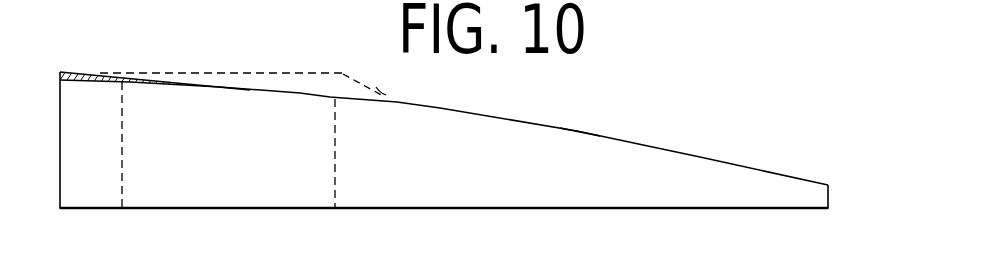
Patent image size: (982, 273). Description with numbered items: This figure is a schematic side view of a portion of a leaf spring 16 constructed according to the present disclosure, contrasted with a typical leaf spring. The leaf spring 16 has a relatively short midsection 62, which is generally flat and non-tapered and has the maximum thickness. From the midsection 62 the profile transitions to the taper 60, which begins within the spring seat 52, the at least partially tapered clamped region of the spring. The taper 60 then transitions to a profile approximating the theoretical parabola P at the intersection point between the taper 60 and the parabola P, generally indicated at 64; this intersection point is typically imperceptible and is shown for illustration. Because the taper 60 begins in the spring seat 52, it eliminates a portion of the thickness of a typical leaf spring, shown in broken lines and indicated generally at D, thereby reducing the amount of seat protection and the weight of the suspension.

The leaf spring 16 is at (430, 219).
The spring seat 52 is at (335, 213).
The rear taper 60 is at (222, 83).
The midsection 62 is at (122, 65).
The intersection point 64 is at (303, 94).
The eliminated thickness portion D is at (392, 84).
The theoretical parabola P is at (575, 131).